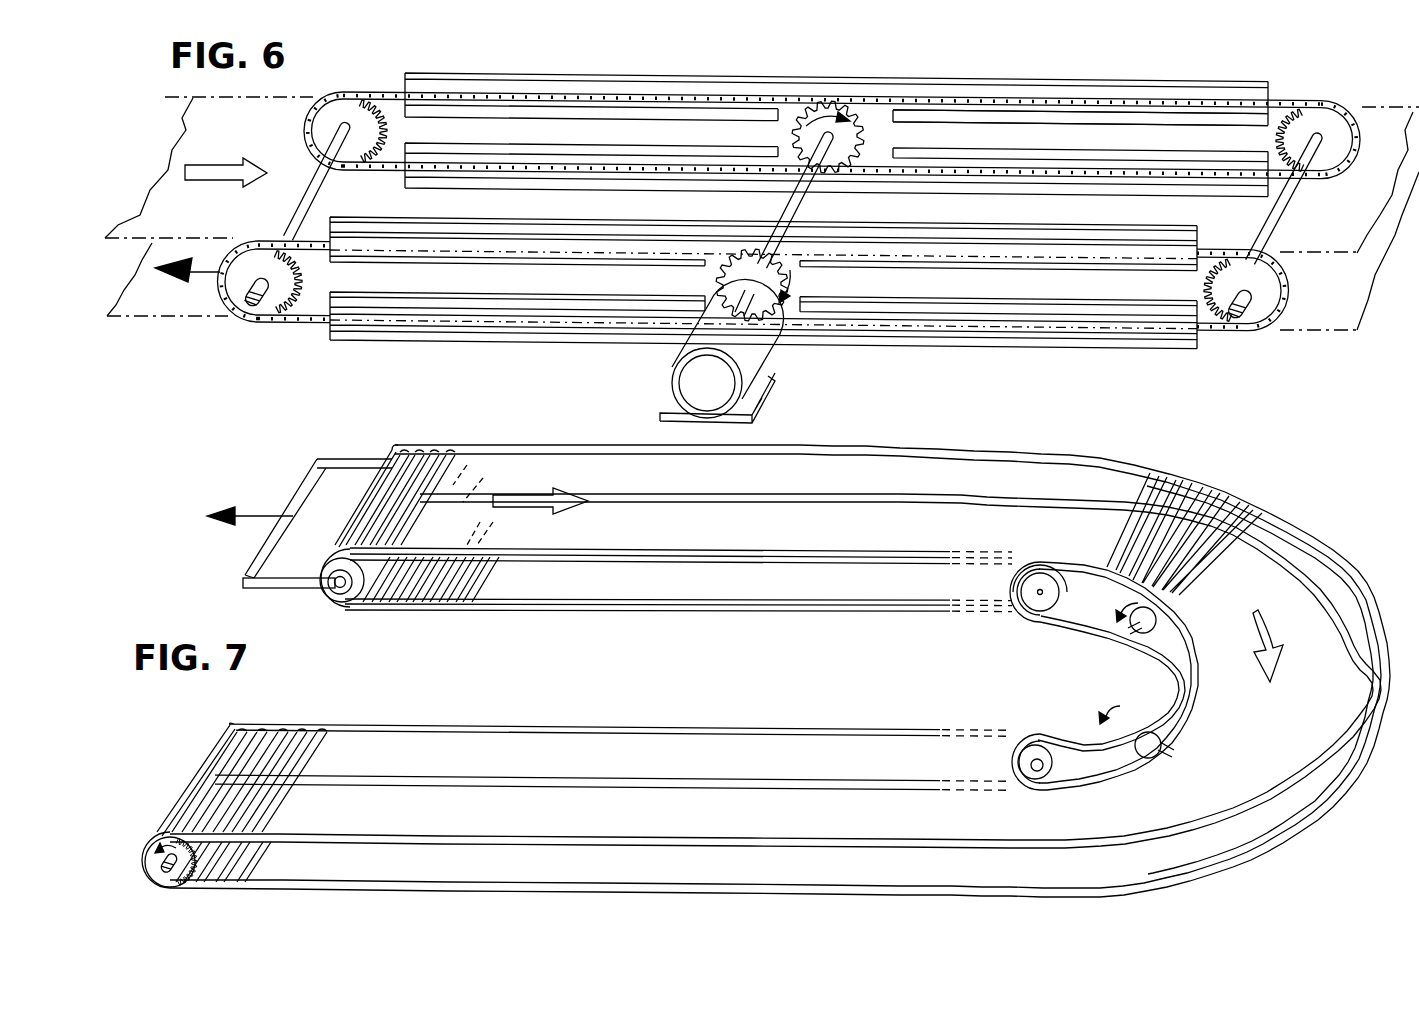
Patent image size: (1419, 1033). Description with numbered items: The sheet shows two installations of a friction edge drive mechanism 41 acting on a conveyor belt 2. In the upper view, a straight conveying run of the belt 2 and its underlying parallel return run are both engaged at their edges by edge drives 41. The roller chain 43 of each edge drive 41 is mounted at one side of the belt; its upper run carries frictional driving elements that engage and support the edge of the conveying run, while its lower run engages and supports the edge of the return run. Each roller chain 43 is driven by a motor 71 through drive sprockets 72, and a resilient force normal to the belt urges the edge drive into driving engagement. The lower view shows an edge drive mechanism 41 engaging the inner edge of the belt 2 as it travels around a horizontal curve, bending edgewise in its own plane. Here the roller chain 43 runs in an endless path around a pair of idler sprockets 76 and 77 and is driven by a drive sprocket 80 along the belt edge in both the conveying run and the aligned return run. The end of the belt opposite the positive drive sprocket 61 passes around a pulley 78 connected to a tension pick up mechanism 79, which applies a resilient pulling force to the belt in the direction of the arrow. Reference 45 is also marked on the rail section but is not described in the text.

In FIG. 6, the belt 2 is at (200, 116).
In FIG. 7, the belt 2 is at (542, 438).
In FIG. 6, the edge drive mechanism 41 is at (532, 68).
In FIG. 7, the edge drive mechanism 41 is at (1000, 578).
In FIG. 6, the roller chain 43 is at (383, 76).
In FIG. 7, the roller chain 43 is at (1097, 568).
In FIG. 6, the guide rail section 45 is at (1010, 70).
In FIG. 7, the positive drive sprocket 61 is at (160, 862).
In FIG. 6, the motor 71 is at (690, 372).
In FIG. 6, the drive sprockets 72 is at (858, 142).
In FIG. 7, the idler sprocket 76 is at (1048, 602).
In FIG. 7, the idler sprocket 77 is at (1045, 772).
In FIG. 7, the pulley 78 is at (356, 600).
In FIG. 7, the tension pick up mechanism 79 is at (305, 500).
In FIG. 7, the drive sprocket 80 is at (1135, 633).